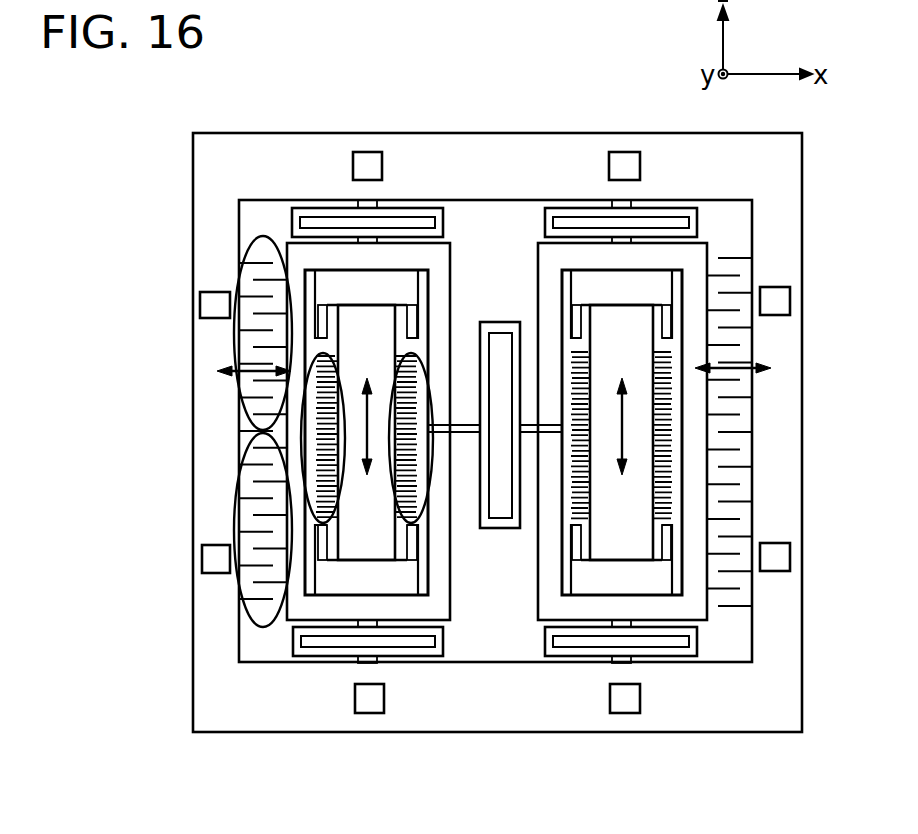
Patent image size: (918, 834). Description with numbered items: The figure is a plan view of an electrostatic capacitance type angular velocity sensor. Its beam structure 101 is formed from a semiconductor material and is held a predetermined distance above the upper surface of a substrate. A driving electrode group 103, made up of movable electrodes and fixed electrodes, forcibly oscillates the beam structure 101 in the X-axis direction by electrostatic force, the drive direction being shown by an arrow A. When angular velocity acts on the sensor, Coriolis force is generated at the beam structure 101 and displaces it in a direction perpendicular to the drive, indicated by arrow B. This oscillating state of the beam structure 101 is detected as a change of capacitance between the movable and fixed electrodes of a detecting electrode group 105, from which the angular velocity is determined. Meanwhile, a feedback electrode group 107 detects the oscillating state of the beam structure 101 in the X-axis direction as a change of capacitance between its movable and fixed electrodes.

The beam structure 101 is at (395, 265).
The driving electrode group 103 is at (233, 282).
The detecting electrode group 105 is at (428, 522).
The feedback electrode group 107 is at (233, 500).
The driving vibration direction arrow A is at (233, 373).
The detection vibration direction arrow B is at (372, 383).